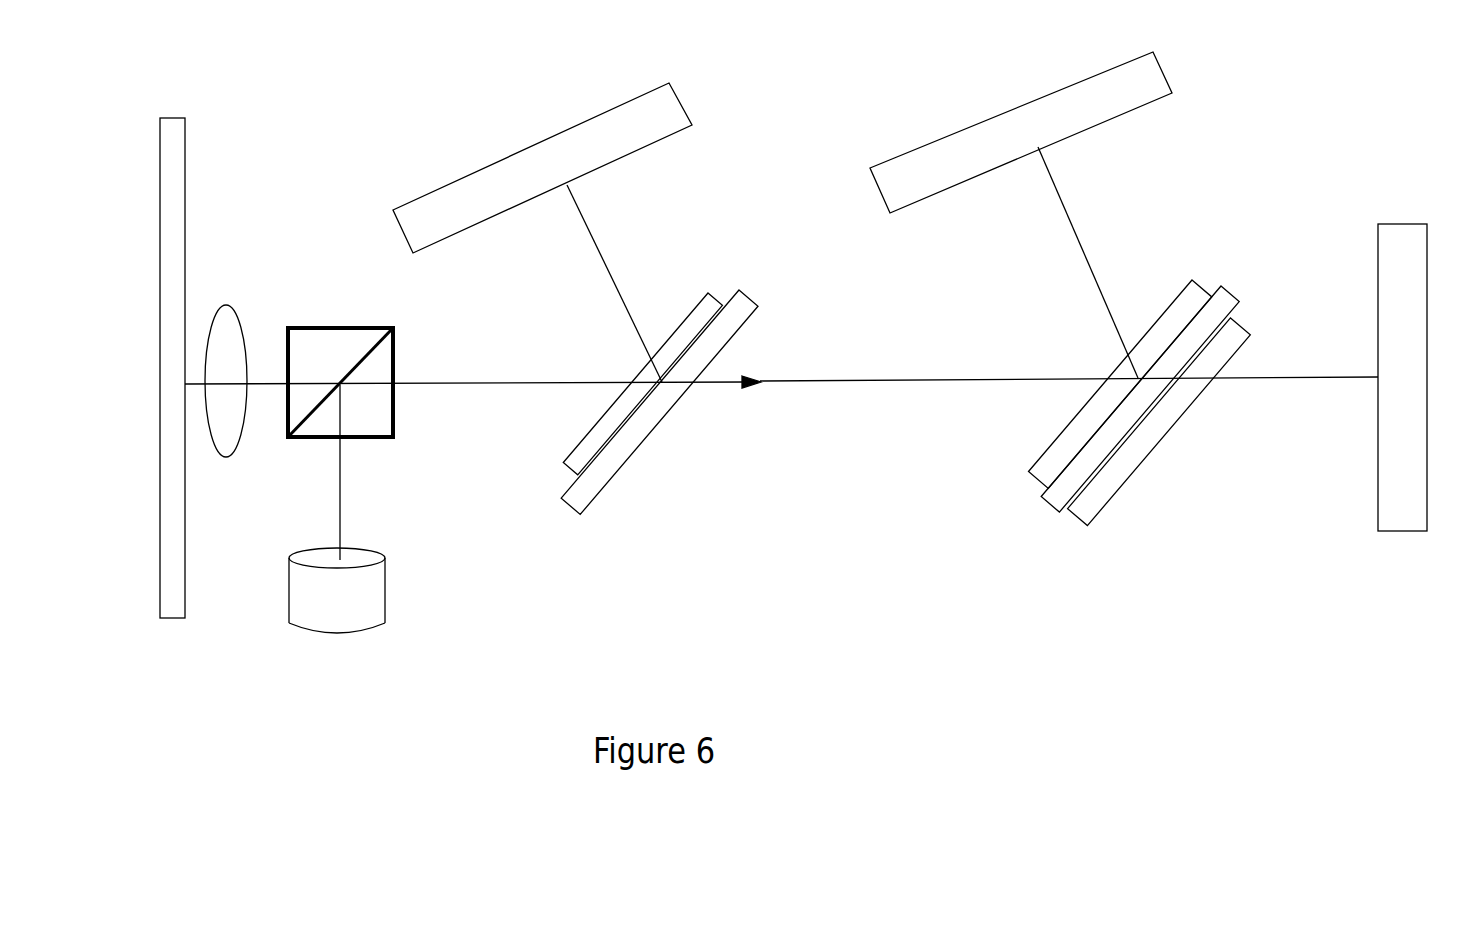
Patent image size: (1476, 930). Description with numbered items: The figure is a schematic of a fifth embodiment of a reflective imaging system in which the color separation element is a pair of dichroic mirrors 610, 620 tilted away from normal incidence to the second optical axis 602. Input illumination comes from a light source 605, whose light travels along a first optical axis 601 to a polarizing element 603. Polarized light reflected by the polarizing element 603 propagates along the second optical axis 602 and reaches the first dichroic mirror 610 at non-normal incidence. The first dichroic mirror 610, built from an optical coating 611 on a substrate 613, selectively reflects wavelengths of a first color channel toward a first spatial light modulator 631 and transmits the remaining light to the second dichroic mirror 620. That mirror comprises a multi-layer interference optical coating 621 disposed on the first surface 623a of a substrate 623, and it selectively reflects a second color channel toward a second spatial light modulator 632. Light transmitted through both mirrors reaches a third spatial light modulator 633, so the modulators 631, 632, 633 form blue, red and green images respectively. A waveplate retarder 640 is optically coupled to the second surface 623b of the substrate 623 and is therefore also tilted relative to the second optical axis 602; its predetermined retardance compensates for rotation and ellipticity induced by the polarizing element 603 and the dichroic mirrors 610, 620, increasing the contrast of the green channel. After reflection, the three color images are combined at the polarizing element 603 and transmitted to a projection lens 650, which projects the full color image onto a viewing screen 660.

The first optical axis 601 is at (340, 500).
The second optical axis 602 is at (890, 385).
The polarizing element 603 is at (347, 328).
The light source 605 is at (385, 633).
The first dichroic mirror 610 is at (636, 417).
The optical coating 611 is at (558, 473).
The substrate 613 is at (577, 527).
The second dichroic mirror 620 is at (1121, 372).
The optical coating 621 is at (1183, 283).
The substrate 623 is at (1121, 401).
The first surface 623a is at (1040, 497).
The second surface 623b is at (1060, 520).
The first spatial light modulator 631 is at (538, 137).
The second spatial light modulator 632 is at (947, 127).
The spatial light modulator 633 is at (1405, 222).
The waveplate retarder 640 is at (1121, 401).
The projection lens 650 is at (218, 310).
The viewing screen 660 is at (190, 630).